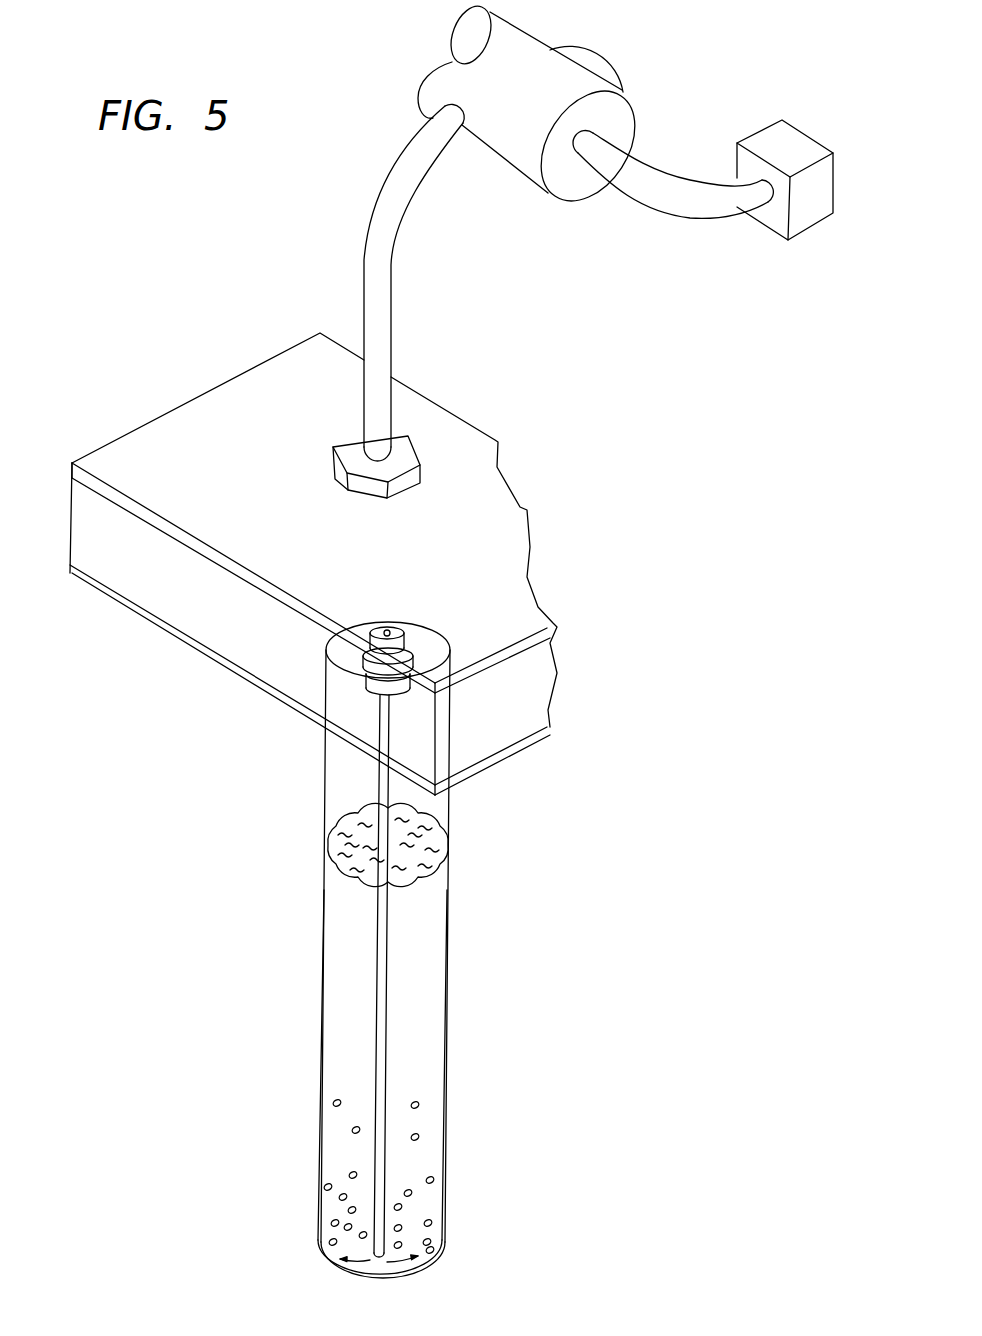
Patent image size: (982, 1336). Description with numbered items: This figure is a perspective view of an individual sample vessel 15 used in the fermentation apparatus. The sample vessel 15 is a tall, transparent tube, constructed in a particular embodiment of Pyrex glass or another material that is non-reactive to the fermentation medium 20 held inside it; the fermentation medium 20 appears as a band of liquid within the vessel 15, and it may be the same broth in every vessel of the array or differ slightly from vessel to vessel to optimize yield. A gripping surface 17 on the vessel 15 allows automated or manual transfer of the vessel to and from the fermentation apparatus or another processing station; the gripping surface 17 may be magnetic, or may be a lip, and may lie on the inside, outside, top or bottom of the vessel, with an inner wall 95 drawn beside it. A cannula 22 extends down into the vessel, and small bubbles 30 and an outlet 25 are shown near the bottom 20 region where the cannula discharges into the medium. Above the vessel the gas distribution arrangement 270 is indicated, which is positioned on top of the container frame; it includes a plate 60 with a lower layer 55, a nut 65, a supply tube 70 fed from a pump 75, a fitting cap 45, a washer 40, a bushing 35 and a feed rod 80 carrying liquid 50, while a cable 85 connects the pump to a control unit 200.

The pump 75 is at (415, 95).
The supply tube 70 is at (365, 277).
The nut 65 is at (343, 440).
The support plate 60 is at (112, 562).
The bottom layer of plate 55 is at (157, 638).
The fitting cap 45 is at (362, 636).
The washer 40 is at (363, 650).
The bushing 35 is at (368, 677).
The feed rod 80 is at (363, 700).
The liquid 50 is at (343, 788).
The gripping surface 17 is at (325, 892).
The inner tube wall 95 is at (322, 938).
The gas distribution arrangement 270 is at (516, 785).
The sample vessel 15 is at (318, 1158).
The bubbles 30 is at (332, 1223).
The fermentation medium 20 is at (430, 1128).
The cannula 22 is at (387, 1167).
The tube bottom 25 is at (398, 1268).
The control unit 200 is at (793, 313).
The cable 85 is at (767, 230).